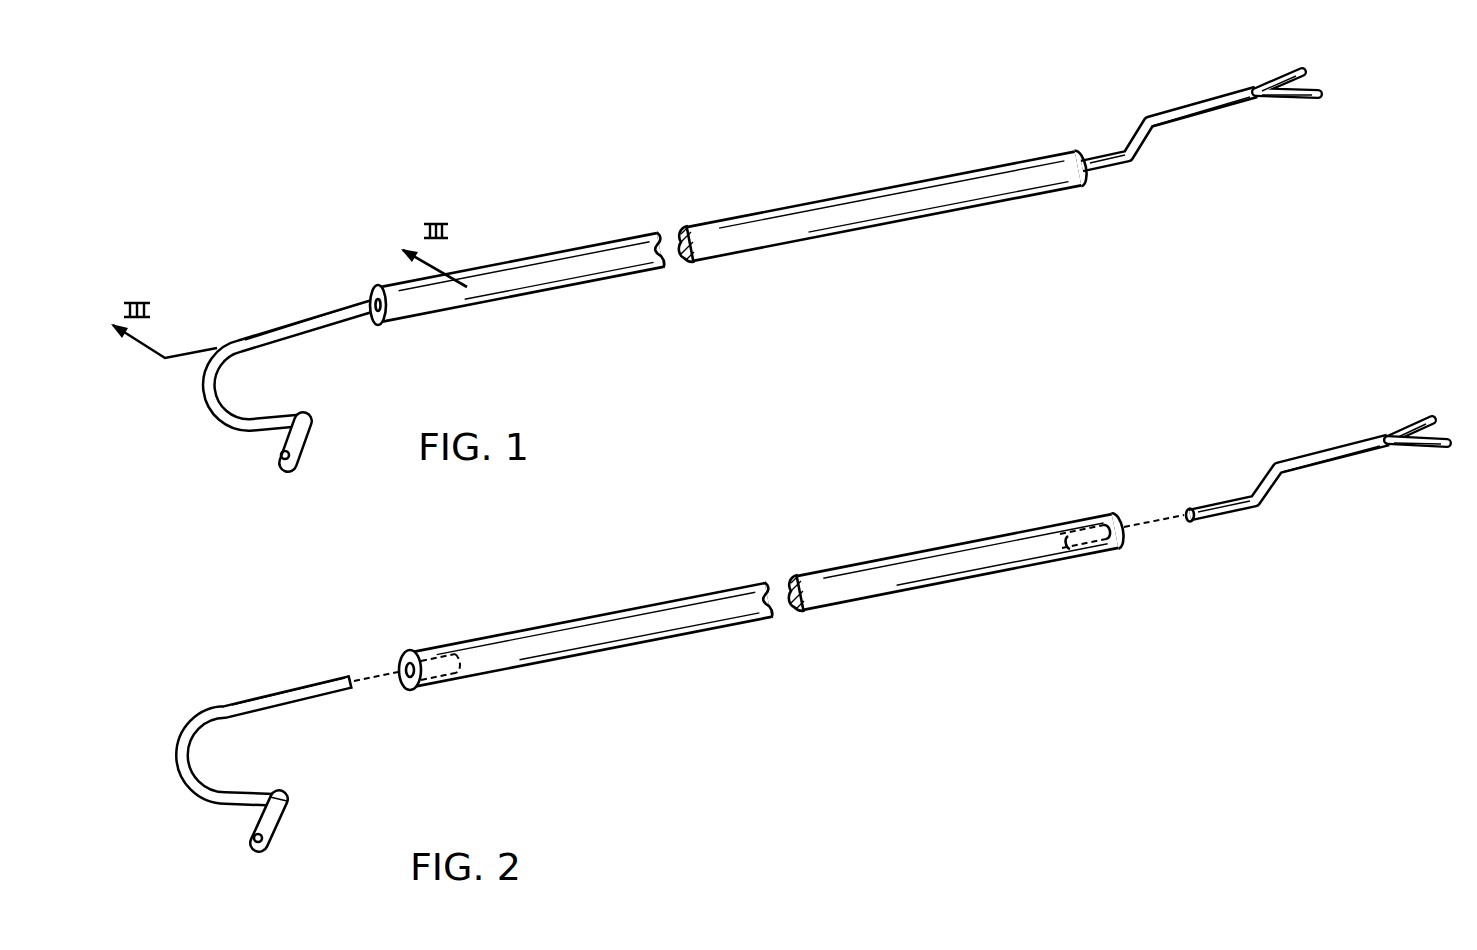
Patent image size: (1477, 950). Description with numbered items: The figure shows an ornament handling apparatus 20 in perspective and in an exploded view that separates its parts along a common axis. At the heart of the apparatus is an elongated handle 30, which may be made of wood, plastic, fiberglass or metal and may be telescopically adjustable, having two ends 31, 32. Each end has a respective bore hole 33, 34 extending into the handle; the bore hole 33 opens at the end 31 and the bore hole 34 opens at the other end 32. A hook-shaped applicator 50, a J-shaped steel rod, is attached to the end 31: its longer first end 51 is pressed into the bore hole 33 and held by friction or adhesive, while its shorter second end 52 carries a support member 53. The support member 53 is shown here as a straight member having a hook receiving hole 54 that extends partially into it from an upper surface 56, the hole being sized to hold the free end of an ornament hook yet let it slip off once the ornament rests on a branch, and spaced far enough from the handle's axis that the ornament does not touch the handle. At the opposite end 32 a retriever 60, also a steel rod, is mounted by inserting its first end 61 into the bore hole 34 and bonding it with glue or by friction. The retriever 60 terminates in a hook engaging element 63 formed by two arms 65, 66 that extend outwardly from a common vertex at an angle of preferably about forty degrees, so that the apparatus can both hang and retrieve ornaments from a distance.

In FIG. 1, the ornament handling apparatus 20 is at (763, 263).
In FIG. 2, the ornament handling apparatus 20 is at (822, 614).
In FIG. 1, the elongated handle 30 is at (844, 183).
In FIG. 2, the elongated handle 30 is at (791, 607).
In FIG. 2, the end of elongated handle 31 is at (444, 666).
In FIG. 2, the other end of elongated handle 32 is at (1121, 534).
In FIG. 2, the bore hole 33 is at (408, 690).
In FIG. 2, the bore hole 34 is at (1092, 538).
In FIG. 1, the hook-shaped applicator 50 is at (294, 382).
In FIG. 2, the hook-shaped applicator 50 is at (270, 746).
In FIG. 2, the first end of applicator 51 is at (346, 678).
In FIG. 2, the second end of applicator 52 is at (275, 795).
In FIG. 1, the support member 53 is at (300, 446).
In FIG. 2, the support member 53 is at (273, 807).
In FIG. 2, the hook receiving hole 54 is at (270, 851).
In FIG. 2, the upper surface of support member 56 is at (257, 822).
In FIG. 1, the retriever 60 is at (1200, 103).
In FIG. 2, the retriever 60 is at (1331, 467).
In FIG. 2, the first end of retriever 61 is at (1192, 522).
In FIG. 1, the hook engaging element 63 is at (1262, 90).
In FIG. 2, the hook engaging element 63 is at (1399, 436).
In FIG. 2, the arm of hook engaging element 65 is at (1433, 449).
In FIG. 2, the arm of hook engaging element 66 is at (1418, 420).